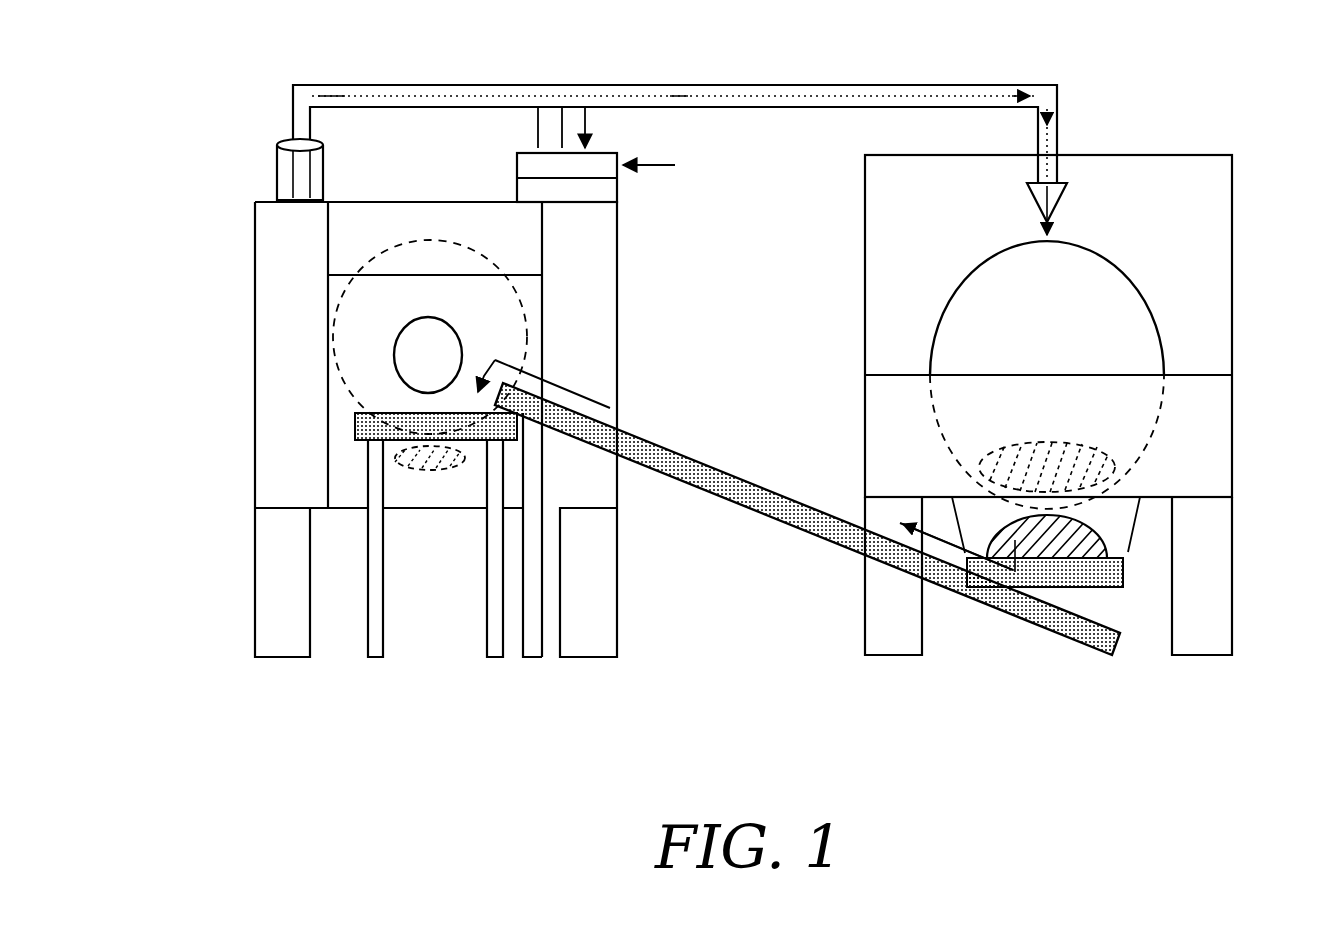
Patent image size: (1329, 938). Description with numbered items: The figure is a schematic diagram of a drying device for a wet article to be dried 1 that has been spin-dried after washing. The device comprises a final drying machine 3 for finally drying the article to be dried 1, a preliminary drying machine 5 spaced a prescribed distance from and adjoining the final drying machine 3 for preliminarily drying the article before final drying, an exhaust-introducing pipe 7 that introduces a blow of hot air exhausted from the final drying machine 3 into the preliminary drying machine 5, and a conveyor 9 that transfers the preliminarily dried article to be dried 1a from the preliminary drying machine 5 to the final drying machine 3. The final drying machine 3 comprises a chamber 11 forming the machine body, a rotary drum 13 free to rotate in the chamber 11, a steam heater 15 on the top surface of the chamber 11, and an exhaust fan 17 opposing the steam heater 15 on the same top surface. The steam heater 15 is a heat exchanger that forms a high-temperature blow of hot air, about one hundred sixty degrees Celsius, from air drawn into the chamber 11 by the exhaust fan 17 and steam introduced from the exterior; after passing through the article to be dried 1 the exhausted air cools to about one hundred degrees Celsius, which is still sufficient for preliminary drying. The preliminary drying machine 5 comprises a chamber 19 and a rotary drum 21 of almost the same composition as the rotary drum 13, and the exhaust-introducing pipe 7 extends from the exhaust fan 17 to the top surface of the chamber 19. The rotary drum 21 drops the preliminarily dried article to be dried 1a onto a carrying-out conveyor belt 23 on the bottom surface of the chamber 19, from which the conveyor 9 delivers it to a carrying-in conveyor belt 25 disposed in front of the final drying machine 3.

The article to be dried 1 is at (425, 472).
The preliminarily dried article to be dried 1a is at (1104, 547).
The final drying machine 3 is at (238, 328).
The preliminary drying machine 5 is at (1243, 428).
The exhaust-introducing pipe 7 is at (722, 85).
The conveyor 9 is at (775, 520).
The chamber 11 is at (255, 412).
The rotary drum 13 is at (323, 284).
The steam heater 15 is at (516, 168).
The exhaust fan 17 is at (276, 176).
The chamber 19 is at (1233, 318).
The rotary drum 21 is at (932, 306).
The carrying-out conveyor belt 23 is at (1110, 588).
The carrying-in conveyor belt 25 is at (354, 427).